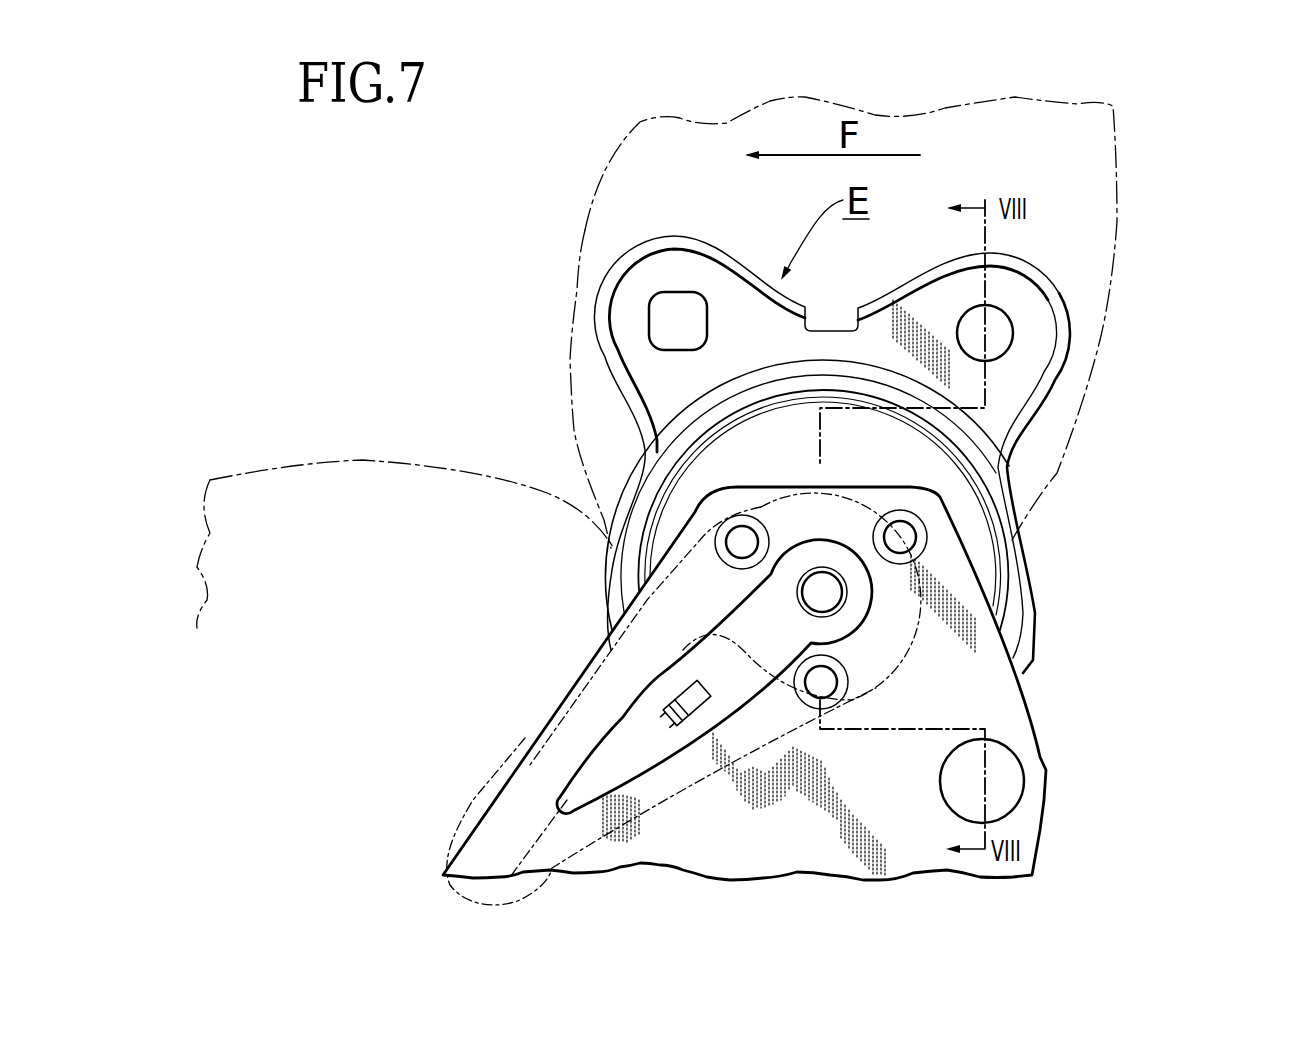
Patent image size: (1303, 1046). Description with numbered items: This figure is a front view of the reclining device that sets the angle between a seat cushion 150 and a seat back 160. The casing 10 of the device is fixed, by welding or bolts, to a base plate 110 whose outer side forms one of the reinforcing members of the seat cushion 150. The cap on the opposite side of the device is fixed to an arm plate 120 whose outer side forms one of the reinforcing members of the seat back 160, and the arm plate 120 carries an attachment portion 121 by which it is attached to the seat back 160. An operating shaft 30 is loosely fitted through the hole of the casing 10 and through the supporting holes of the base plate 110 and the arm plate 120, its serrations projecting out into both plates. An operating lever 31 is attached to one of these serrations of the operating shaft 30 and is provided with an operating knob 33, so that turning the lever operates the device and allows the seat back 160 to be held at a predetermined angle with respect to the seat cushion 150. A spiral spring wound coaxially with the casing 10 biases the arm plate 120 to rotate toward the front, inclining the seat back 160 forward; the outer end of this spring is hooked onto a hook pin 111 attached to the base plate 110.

The casing 10 is at (971, 533).
The operating shaft 30 is at (861, 594).
The operating lever 31 is at (623, 717).
The operating knob 33 is at (525, 738).
The base plate 110 is at (1042, 721).
The hook pin 111 is at (1025, 785).
The arm plate 120 is at (1077, 320).
The attachment portion 121 is at (612, 314).
The seat cushion 150 is at (379, 462).
The seat back 160 is at (1118, 223).